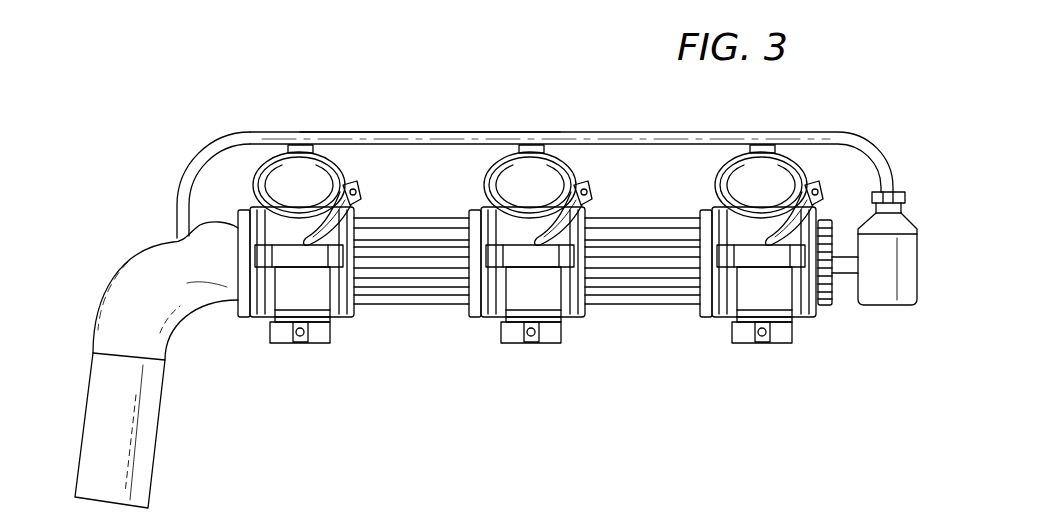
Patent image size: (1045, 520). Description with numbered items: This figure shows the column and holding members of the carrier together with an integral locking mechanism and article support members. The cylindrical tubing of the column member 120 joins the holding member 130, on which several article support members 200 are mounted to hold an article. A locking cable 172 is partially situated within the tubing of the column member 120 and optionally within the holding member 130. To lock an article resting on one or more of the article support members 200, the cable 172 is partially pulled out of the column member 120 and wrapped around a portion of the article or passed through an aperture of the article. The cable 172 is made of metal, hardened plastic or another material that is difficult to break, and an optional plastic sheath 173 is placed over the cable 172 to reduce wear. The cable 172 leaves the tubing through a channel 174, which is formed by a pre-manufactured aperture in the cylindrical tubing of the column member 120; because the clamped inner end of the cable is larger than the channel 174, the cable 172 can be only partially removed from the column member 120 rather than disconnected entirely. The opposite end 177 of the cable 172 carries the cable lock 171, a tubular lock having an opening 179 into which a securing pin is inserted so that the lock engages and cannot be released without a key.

The column member 120 is at (145, 485).
The holding member 130 is at (393, 322).
The cable lock 171 is at (917, 287).
The locking cable 172 is at (585, 118).
The plastic sheath 173 is at (410, 132).
The channel 174 is at (173, 241).
The opposite end 177 is at (921, 180).
The opening 179 is at (848, 276).
The article support members 200 is at (347, 313).